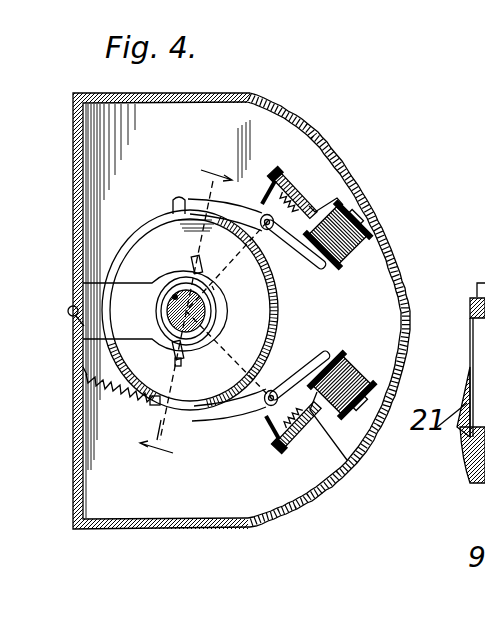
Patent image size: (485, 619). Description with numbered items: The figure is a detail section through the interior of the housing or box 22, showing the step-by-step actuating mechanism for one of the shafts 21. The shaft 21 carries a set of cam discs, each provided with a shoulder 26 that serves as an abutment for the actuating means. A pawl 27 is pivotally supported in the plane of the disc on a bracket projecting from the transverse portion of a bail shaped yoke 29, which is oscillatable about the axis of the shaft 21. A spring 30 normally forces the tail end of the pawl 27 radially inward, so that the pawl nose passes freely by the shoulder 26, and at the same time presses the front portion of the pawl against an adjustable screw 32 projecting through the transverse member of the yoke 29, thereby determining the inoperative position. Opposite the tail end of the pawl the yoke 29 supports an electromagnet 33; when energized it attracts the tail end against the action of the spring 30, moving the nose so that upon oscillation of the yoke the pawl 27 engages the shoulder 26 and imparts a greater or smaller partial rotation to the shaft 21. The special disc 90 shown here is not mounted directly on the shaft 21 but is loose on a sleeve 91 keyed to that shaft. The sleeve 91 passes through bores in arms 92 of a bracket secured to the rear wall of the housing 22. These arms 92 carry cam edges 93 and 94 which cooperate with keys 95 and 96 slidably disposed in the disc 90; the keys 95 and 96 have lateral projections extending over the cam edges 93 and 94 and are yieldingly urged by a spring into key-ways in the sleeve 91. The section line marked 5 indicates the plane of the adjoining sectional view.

The section line 5- 5 is at (186, 312).
The shaft 21 is at (172, 304).
The housing or box 22 is at (340, 153).
The shoulder 26 is at (186, 205).
The pawl 27 is at (198, 198).
The bail shaped yoke 29 is at (261, 186).
The spring 30 is at (311, 204).
The adjustable screw 32 is at (289, 170).
The electromagnet 33 is at (372, 238).
The disc 90 is at (144, 232).
The sleeve 91 is at (213, 315).
The arms 92 is at (86, 326).
The cam edge 93 is at (211, 284).
The cam edge 94 is at (172, 347).
The key 95 is at (192, 268).
The key 96 is at (177, 366).